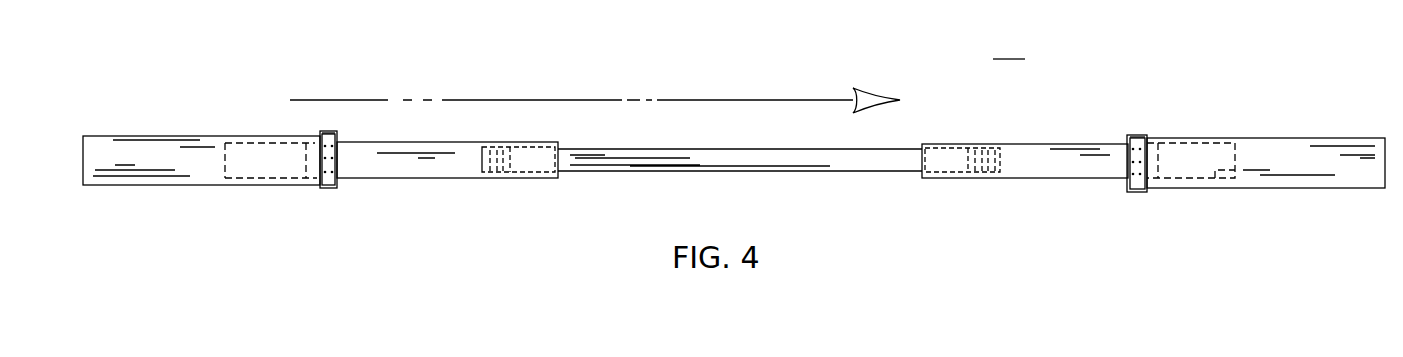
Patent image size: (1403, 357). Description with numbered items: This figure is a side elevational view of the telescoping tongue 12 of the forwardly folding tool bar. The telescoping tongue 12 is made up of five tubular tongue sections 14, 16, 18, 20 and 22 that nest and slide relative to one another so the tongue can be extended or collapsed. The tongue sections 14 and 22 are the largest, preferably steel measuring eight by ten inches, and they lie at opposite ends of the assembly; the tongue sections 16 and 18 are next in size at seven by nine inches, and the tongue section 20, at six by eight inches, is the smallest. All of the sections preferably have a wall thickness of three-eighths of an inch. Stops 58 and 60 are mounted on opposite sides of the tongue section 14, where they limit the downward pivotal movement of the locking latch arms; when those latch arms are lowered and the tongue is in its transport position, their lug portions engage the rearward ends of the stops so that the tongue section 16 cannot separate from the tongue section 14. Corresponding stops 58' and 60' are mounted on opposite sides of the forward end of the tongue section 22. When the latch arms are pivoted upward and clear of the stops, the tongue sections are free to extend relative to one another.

The telescoping tongue 12 is at (1308, 118).
The tongue section 14 is at (1270, 173).
The tongue section 16 is at (1042, 170).
The tongue section 18 is at (822, 156).
The tongue section 20 is at (463, 172).
The tongue section 22 is at (208, 185).
The stop 58 is at (1154, 203).
The stop 58' is at (351, 197).
The stop 60 is at (1177, 101).
The stop 60' is at (351, 96).